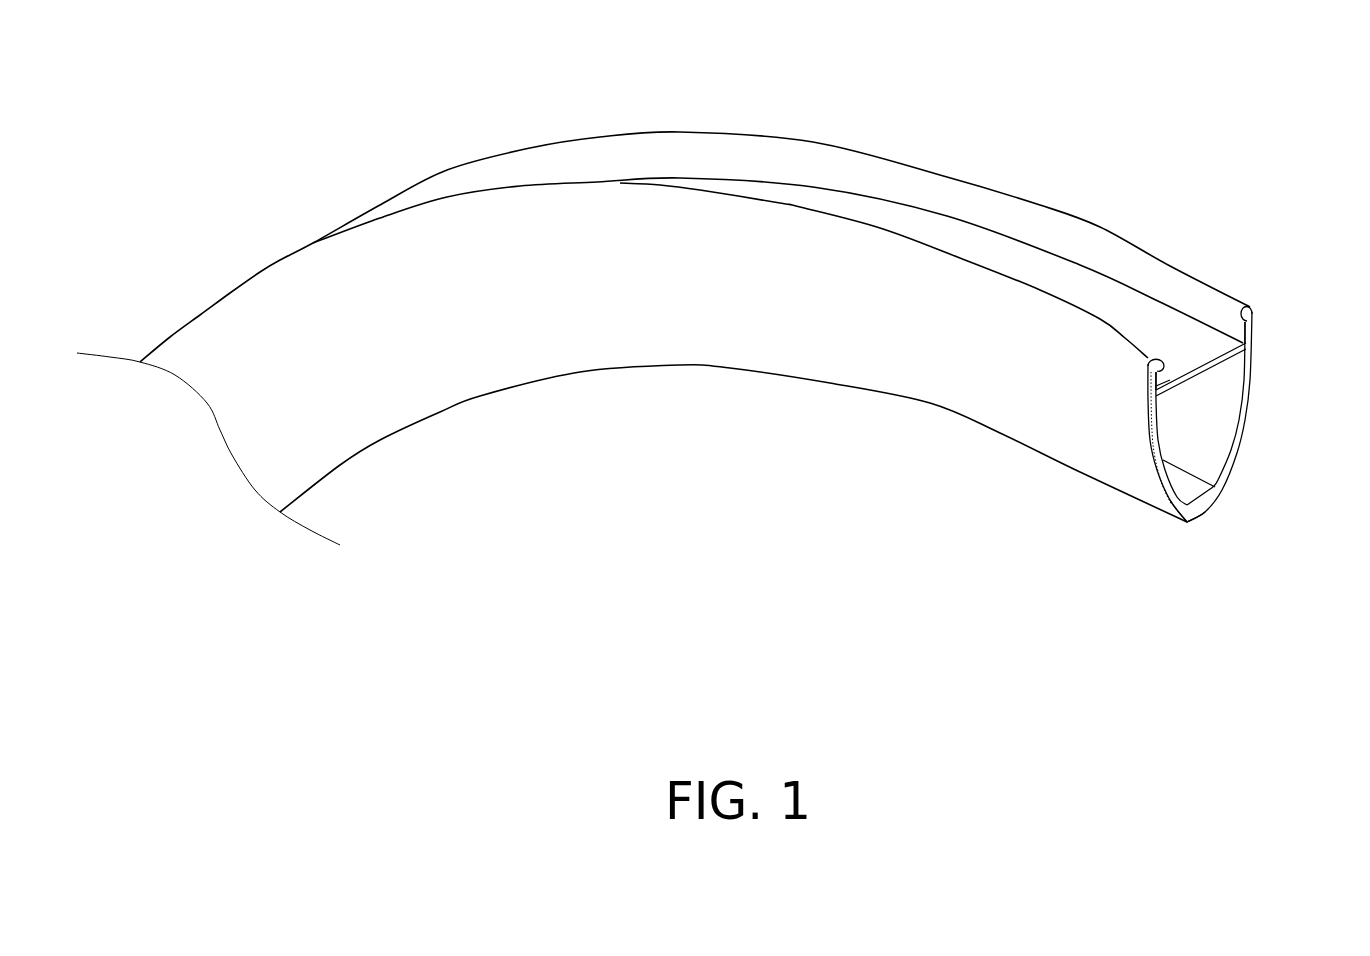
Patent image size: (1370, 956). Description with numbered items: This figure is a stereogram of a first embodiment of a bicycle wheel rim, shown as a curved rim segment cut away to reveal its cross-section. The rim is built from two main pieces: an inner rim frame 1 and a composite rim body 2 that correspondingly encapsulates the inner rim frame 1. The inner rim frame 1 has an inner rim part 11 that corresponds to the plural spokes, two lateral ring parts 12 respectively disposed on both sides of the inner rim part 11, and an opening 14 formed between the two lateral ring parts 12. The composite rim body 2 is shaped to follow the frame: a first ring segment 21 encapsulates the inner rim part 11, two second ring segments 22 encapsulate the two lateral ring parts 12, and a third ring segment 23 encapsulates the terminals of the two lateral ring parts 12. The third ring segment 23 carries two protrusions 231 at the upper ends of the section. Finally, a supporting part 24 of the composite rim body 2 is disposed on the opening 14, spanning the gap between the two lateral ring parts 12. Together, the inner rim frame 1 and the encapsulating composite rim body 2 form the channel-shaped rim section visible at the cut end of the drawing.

The inner rim frame 1 is at (1263, 433).
The inner rim part 11 is at (1205, 502).
The lateral ring part 12 is at (1160, 462).
The opening 14 is at (1208, 378).
The composite rim body 2 is at (1050, 523).
The first ring segment 21 is at (1197, 523).
The second ring segment 22 is at (1148, 443).
The third ring segment 23 is at (1147, 355).
The protrusion 231 is at (1237, 316).
The supporting part 24 is at (1188, 370).